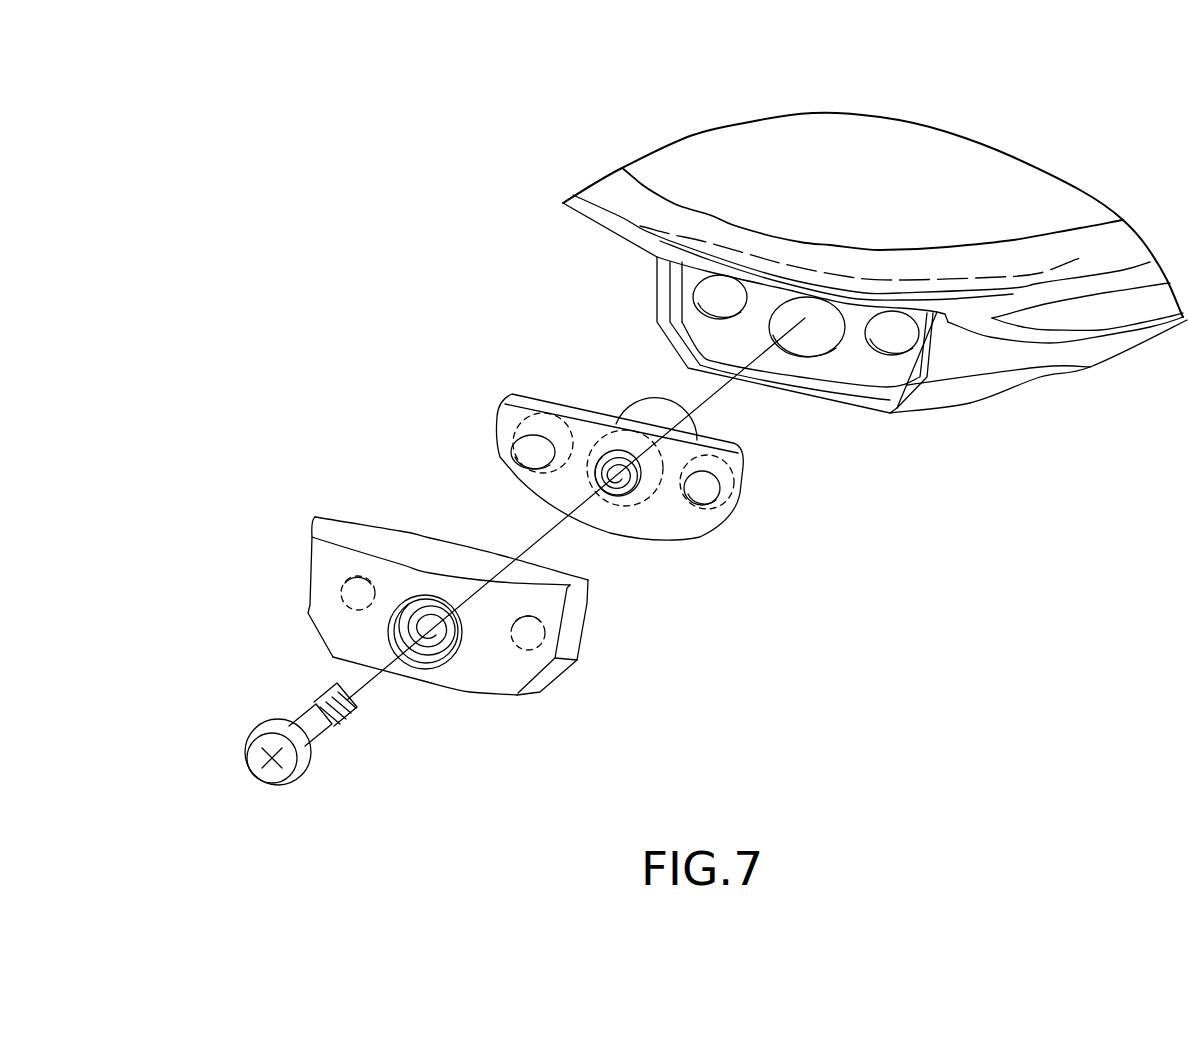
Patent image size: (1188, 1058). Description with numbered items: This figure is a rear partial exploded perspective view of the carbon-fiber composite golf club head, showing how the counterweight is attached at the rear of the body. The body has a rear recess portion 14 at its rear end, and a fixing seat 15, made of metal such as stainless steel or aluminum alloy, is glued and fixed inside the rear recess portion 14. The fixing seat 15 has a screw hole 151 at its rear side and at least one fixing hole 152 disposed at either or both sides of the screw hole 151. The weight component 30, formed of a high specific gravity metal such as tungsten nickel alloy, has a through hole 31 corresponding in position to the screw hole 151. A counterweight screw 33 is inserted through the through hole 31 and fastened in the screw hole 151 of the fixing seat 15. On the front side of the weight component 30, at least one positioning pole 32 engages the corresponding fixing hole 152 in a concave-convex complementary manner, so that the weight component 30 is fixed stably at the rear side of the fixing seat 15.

The rear recess portion 14 is at (855, 365).
The fixing seat 15 is at (679, 499).
The screw hole 151 is at (625, 487).
The fixing hole 152 is at (705, 497).
The weight component 30 is at (491, 659).
The through hole 31 is at (433, 637).
The positioning pole 32 is at (548, 623).
The counterweight screw 33 is at (272, 773).